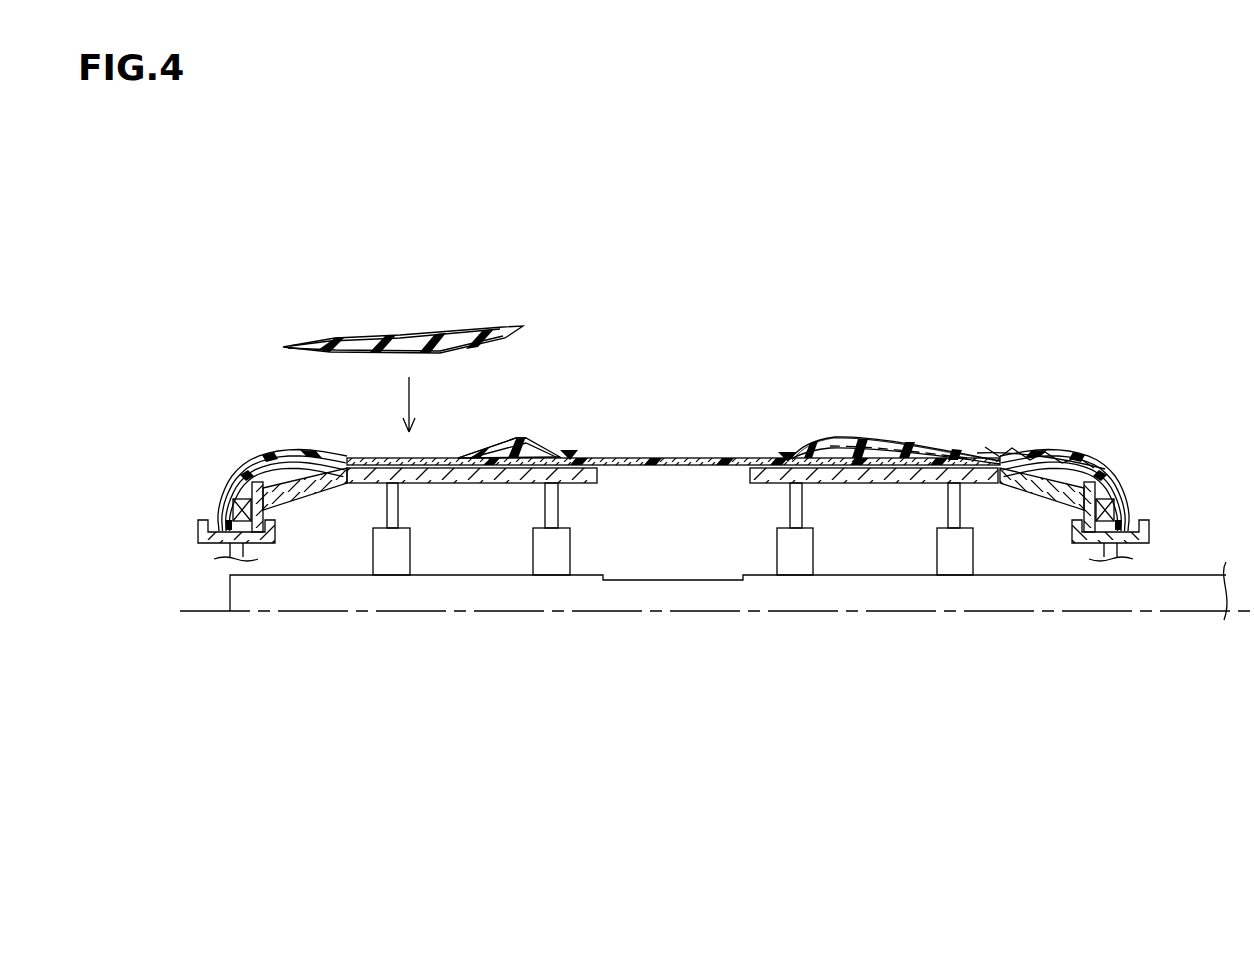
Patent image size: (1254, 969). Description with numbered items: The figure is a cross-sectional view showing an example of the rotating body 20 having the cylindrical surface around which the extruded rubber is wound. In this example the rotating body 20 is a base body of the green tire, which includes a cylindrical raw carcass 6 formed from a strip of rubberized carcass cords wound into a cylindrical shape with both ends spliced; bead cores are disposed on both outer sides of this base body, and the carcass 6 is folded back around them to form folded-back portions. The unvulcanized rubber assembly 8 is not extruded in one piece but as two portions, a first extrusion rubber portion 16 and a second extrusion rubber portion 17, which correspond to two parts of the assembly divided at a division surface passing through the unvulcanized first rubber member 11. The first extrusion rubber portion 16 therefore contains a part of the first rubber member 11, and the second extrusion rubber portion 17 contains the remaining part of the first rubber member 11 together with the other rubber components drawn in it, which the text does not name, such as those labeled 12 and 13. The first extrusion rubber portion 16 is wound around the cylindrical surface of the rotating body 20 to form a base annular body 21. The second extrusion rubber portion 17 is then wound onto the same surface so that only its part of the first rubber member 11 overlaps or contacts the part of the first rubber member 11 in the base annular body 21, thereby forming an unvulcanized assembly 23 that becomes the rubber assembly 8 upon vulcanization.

The carcass 6 is at (731, 456).
The unvulcanized rubber assembly 8 is at (938, 352).
The unvulcanized assembly 23 is at (897, 446).
The unvulcanized first rubber member 11 is at (447, 343).
The base layer 12 is at (558, 455).
The backing layer 13 is at (337, 340).
The first extrusion rubber portion 16 is at (635, 367).
The second extrusion rubber portion 17 is at (440, 252).
The rotating body 20 is at (1091, 424).
The base annular body 21 is at (576, 444).